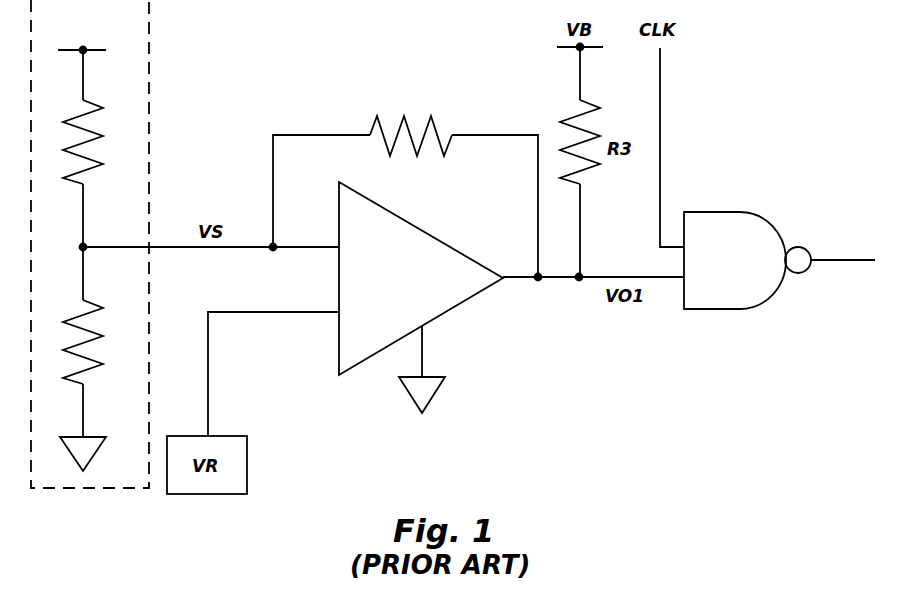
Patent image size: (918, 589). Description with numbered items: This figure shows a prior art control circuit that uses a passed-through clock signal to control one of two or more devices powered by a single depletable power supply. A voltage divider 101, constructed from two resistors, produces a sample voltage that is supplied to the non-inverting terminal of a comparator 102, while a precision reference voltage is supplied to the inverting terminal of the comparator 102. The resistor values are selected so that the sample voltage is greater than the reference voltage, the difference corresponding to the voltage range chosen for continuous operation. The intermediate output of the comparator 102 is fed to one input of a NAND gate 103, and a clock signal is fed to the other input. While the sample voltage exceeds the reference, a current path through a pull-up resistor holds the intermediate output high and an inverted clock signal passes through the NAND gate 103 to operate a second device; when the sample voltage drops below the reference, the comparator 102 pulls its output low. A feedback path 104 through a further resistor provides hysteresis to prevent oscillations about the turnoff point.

The voltage divider 101 is at (149, 100).
The comparator 102 is at (421, 297).
The NAND gate 103 is at (779, 260).
The feedback path 104 is at (272, 180).